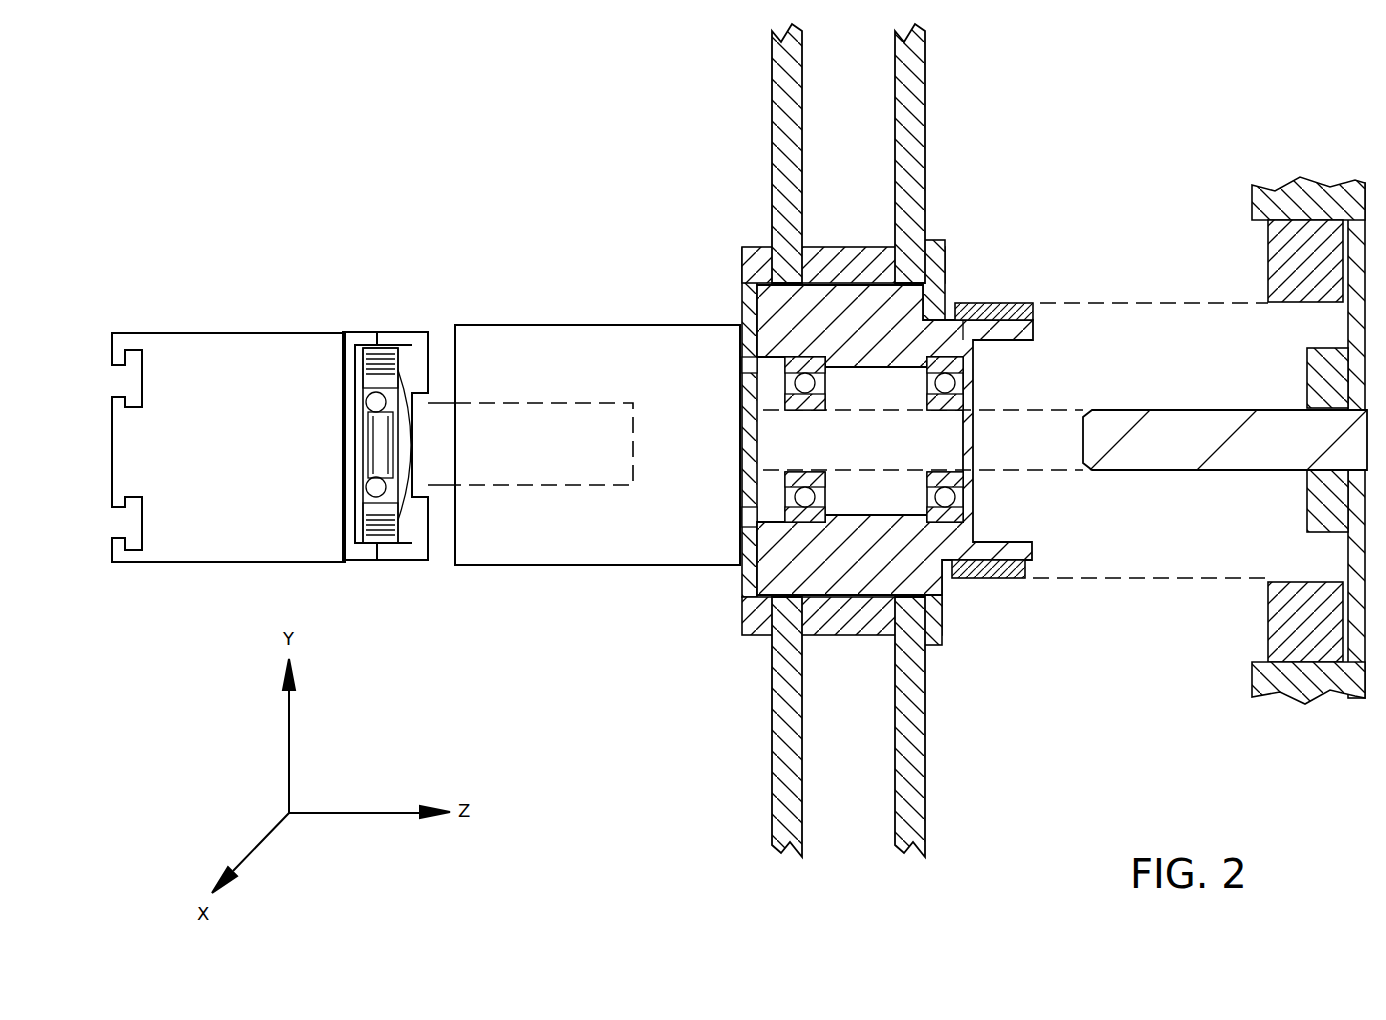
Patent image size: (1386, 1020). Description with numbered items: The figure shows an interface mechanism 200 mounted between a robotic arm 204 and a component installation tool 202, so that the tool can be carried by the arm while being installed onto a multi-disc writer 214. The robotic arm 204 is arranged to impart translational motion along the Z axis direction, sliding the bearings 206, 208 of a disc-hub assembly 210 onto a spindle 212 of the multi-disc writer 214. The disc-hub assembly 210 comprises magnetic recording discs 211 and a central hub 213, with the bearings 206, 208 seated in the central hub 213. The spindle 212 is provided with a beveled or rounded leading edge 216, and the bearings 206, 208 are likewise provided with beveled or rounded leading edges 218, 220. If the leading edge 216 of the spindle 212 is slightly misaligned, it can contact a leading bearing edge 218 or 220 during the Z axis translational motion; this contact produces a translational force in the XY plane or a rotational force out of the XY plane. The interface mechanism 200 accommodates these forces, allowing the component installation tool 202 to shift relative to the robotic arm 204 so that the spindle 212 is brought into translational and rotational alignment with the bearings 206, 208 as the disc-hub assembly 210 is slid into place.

The interface mechanism 200 is at (372, 282).
The component installation tool 202 is at (638, 325).
The robotic arm 204 is at (224, 332).
The bearing 206 is at (782, 415).
The bearing 208 is at (916, 416).
The disc-hub assembly 210 is at (1025, 733).
The magnetic recording discs 211 is at (922, 807).
The spindle 212 is at (1222, 465).
The central hub 213 is at (745, 600).
The multi-disc writer 214 is at (1195, 194).
The leading edge of the spindle 216 is at (1077, 410).
The leading bearing edge 218 is at (827, 420).
The leading bearing edge 220 is at (973, 462).